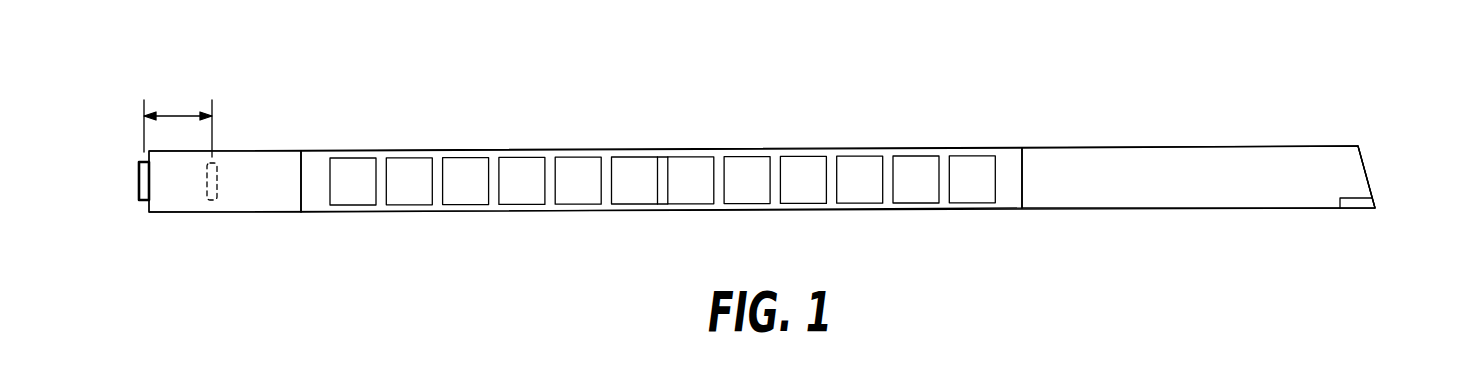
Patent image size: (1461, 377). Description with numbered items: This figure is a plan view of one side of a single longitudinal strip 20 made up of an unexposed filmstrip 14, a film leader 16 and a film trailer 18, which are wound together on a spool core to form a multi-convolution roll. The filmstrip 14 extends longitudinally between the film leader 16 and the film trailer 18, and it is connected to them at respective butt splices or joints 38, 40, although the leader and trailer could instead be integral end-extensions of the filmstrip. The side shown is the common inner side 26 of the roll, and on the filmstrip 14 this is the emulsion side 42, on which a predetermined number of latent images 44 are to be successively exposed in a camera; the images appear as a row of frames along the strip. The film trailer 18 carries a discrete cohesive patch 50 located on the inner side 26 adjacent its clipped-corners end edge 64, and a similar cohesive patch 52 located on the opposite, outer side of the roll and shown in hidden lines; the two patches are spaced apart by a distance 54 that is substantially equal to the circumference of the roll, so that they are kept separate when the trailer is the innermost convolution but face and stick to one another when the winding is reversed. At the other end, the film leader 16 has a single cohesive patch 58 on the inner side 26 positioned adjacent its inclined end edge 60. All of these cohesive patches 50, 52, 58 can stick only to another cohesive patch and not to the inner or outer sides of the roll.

The filmstrip 14 is at (772, 150).
The film leader 16 is at (1207, 148).
The film trailer 18 is at (265, 150).
The single longitudinal strip 20 is at (593, 106).
The inner side 26 is at (254, 186).
The butt splice 38 is at (1023, 178).
The butt splice 40 is at (301, 195).
The emulsion side 42 is at (662, 195).
The latent images 44 is at (522, 158).
The cohesive patch 50 is at (138, 185).
The cohesive patch 52 is at (210, 205).
The distance 54 is at (178, 114).
The cohesive patch 58 is at (1350, 209).
The inclined end edge 60 is at (1368, 180).
The clipped-corners end edge 64 is at (138, 197).